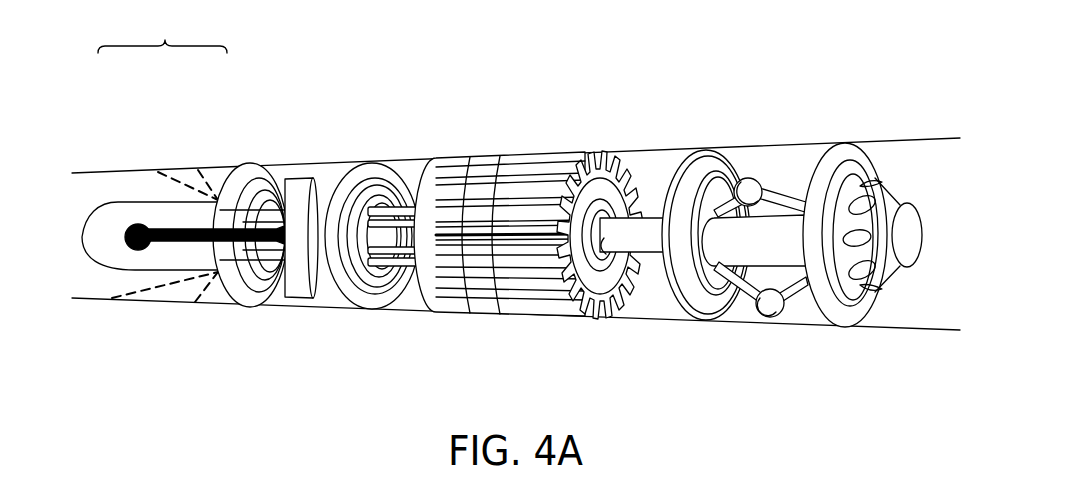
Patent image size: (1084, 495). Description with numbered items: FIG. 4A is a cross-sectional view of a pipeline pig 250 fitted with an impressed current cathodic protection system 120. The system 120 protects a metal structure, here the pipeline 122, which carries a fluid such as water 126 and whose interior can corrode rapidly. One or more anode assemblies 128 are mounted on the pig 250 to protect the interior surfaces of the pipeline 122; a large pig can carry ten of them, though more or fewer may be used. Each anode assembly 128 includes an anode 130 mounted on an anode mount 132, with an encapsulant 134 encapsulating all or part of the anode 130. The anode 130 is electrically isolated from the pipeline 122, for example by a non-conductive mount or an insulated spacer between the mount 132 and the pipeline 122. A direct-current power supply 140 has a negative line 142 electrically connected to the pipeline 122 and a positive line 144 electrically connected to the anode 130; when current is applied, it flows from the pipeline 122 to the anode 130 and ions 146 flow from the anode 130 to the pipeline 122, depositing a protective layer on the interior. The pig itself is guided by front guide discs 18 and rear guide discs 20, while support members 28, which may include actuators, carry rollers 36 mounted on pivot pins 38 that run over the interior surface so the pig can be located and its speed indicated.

The pipeline pig 250 is at (548, 76).
The impressed current cathodic protection system 120 is at (170, 40).
The anode assembly 128 is at (103, 202).
The ions 146 is at (178, 168).
The encapsulant 134 is at (132, 270).
The anode 130 is at (204, 268).
The anode mount 132 is at (293, 229).
The negative line 142 is at (248, 192).
The positive line 144 is at (281, 303).
The power supply 140 is at (300, 178).
The rear guide discs 20 is at (368, 167).
The pipeline 122 is at (637, 322).
The front guide discs 18 is at (790, 251).
The support members 28 is at (770, 186).
The pivot pin 38 is at (755, 313).
The roller 36 is at (782, 318).
The water 126 is at (927, 313).